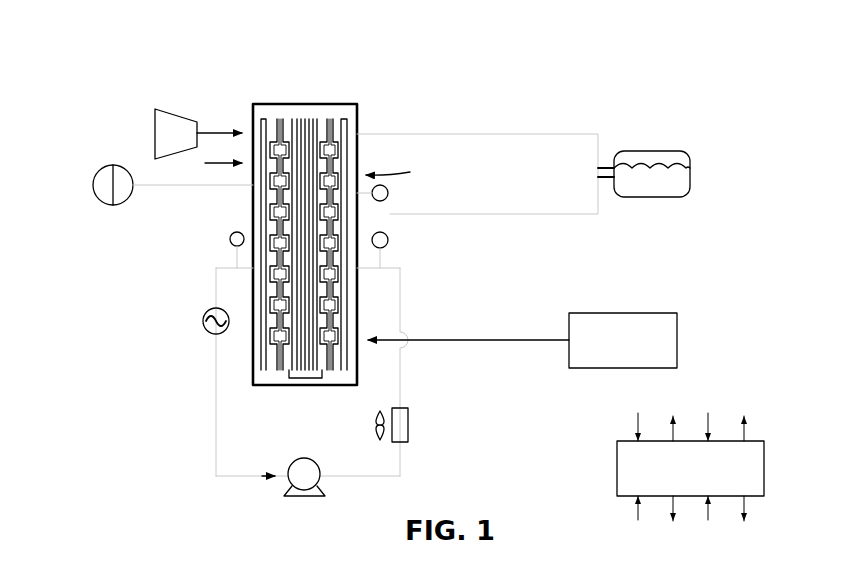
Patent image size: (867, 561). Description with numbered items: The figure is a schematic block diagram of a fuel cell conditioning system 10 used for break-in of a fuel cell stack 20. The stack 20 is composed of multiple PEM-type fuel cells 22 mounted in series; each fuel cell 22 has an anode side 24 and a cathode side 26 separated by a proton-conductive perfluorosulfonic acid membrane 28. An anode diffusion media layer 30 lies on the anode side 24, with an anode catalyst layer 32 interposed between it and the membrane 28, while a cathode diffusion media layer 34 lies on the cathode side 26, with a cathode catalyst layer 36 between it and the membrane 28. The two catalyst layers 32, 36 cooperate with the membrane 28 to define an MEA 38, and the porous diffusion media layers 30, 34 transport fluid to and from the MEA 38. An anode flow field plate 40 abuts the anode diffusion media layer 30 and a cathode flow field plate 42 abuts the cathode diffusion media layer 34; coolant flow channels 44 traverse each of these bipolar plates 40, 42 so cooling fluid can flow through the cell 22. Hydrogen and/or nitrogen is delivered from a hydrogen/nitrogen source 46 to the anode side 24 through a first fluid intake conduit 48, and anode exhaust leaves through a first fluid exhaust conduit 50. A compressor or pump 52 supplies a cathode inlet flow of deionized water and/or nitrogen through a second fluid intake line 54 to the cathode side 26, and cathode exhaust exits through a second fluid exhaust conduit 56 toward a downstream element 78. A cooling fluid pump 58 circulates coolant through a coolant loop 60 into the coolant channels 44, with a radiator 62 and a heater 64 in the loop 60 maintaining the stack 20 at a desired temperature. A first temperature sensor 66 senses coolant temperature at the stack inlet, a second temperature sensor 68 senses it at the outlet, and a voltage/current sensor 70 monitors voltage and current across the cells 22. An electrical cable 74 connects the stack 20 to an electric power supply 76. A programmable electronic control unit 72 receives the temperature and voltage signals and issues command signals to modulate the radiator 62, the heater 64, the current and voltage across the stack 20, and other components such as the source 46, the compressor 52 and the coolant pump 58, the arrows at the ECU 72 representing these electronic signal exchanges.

The fuel cell conditioning system 10 is at (686, 44).
The fuel cell stack 20 is at (330, 233).
The fuel cell 22 is at (362, 102).
The anode side 24 is at (206, 169).
The cathode side 26 is at (409, 173).
The proton-conductive perfluorosulfonic acid membrane 28 is at (306, 120).
The anode diffusion media layer 30 is at (291, 120).
The anode catalyst layer 32 is at (299, 120).
The cathode diffusion media layer 34 is at (322, 120).
The cathode catalyst layer 36 is at (312, 120).
The MEA 38 is at (305, 378).
The anode flow field plate 40 is at (264, 370).
The cathode flow field plate 42 is at (332, 370).
The coolant flow channels 44 is at (330, 150).
The hydrogen/nitrogen source 46 is at (655, 313).
The first fluid intake conduit 48 is at (492, 339).
The first fluid exhaust conduit 50 is at (565, 216).
The compressor or pump 52 is at (154, 114).
The second fluid intake line 54 is at (220, 128).
The second fluid exhaust conduit 56 is at (566, 133).
The cooling fluid pump 58 is at (292, 462).
The coolant loop 60 is at (401, 380).
The radiator 62 is at (409, 418).
The heater 64 is at (203, 320).
The first temperature sensor 66 is at (389, 240).
The second temperature sensor 68 is at (230, 239).
The voltage/current sensor 70 is at (389, 193).
The programmable electronic control unit 72 is at (617, 452).
The electrical connector or cable 74 is at (160, 187).
The electric power supply 76 is at (93, 185).
The fuel tank 78 is at (673, 150).